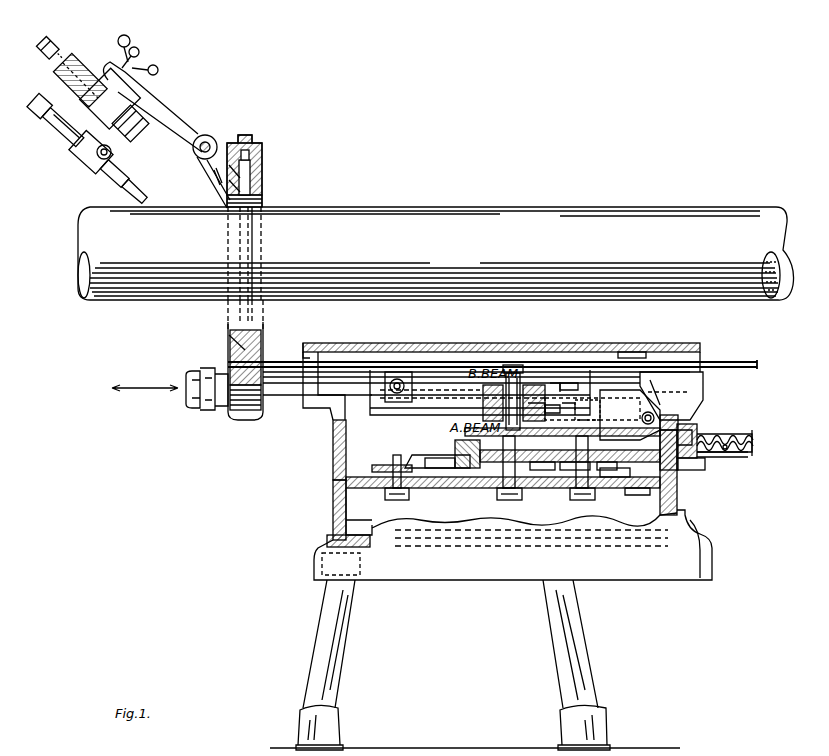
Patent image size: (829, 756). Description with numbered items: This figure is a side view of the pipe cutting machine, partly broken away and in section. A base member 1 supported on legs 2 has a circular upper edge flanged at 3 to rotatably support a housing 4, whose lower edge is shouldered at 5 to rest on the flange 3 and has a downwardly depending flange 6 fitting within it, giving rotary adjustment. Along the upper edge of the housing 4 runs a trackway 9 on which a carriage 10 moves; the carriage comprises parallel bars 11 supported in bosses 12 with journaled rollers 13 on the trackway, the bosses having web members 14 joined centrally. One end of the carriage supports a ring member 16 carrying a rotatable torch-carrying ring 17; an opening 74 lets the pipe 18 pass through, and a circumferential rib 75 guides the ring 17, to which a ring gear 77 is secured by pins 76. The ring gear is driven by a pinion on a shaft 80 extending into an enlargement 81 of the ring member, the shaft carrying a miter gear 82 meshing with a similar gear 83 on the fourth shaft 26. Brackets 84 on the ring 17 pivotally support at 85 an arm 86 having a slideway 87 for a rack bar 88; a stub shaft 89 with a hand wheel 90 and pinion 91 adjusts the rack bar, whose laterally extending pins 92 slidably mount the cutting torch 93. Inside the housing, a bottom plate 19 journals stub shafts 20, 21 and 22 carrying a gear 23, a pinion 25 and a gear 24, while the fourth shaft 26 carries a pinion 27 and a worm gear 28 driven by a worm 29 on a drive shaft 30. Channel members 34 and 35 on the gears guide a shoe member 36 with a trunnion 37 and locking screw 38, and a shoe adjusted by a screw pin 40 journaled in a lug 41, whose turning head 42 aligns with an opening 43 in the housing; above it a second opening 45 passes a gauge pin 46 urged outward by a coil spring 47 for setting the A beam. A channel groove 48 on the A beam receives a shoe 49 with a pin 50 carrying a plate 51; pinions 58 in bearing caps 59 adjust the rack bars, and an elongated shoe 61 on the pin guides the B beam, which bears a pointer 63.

The base member 1 is at (712, 561).
The legs 2 is at (330, 660).
The flange 3 is at (678, 498).
The housing 4 is at (335, 450).
The shoulder 5 is at (333, 490).
The downwardly depending flange 6 is at (352, 513).
The trackway 9 is at (338, 381).
The carriage 10 is at (420, 406).
The parallel bars 11 is at (370, 410).
The bosses 12 is at (414, 375).
The rollers 13 is at (492, 393).
The web members 14 is at (548, 420).
The ring member 16 is at (250, 137).
The torch-carrying ring 17 is at (232, 315).
The pipe 18 is at (673, 220).
The bottom plate 19 is at (372, 385).
The stub shaft 20 is at (414, 491).
The stub shaft 21 is at (522, 491).
The stub shaft 22 is at (592, 490).
The gear 23 is at (381, 465).
The gear 24 is at (546, 483).
The pinion 25 is at (575, 458).
The fourth shaft 26 is at (637, 495).
The pinion 27 is at (672, 474).
The worm gear 28 is at (622, 431).
The worm 29 is at (700, 400).
The drive shaft 30 is at (692, 437).
The channel member 34 is at (416, 458).
The channel member 35 is at (602, 458).
The shoe member 36 is at (570, 455).
The trunnion 37 is at (455, 458).
The locking screw 38 is at (433, 458).
The screw pin 40 is at (613, 488).
The lug 41 is at (560, 447).
The turning head 42 is at (690, 470).
The opening 43 is at (696, 456).
The second opening 45 is at (685, 443).
The gauge pin 46 is at (726, 450).
The coil spring 47 is at (742, 438).
The channel groove 48 is at (580, 436).
The shoe 49 is at (551, 379).
The pin 50 is at (552, 378).
The plate 51 is at (562, 432).
The pinions 58 is at (537, 399).
The bearing caps 59 is at (569, 399).
The elongated shoe 61 is at (497, 393).
The pointer 63 is at (518, 396).
The opening 74 is at (263, 203).
The circumferential rib 75 is at (262, 160).
The pins 76 is at (228, 179).
The ring gear 77 is at (263, 173).
The shaft 80 is at (326, 366).
The enlargement 81 is at (224, 396).
The miter gear 82 is at (651, 342).
The miter gear 83 is at (632, 342).
The brackets 84 is at (222, 168).
The pivot 85 is at (207, 135).
The arm 86 is at (166, 110).
The slideway 87 is at (97, 74).
The rack bar 88 is at (55, 37).
The stub shaft 89 is at (122, 62).
The hand wheel 90 is at (138, 49).
The pinion 91 is at (92, 99).
The laterally extending pins 92 is at (120, 142).
The cutting torch 93 is at (76, 150).